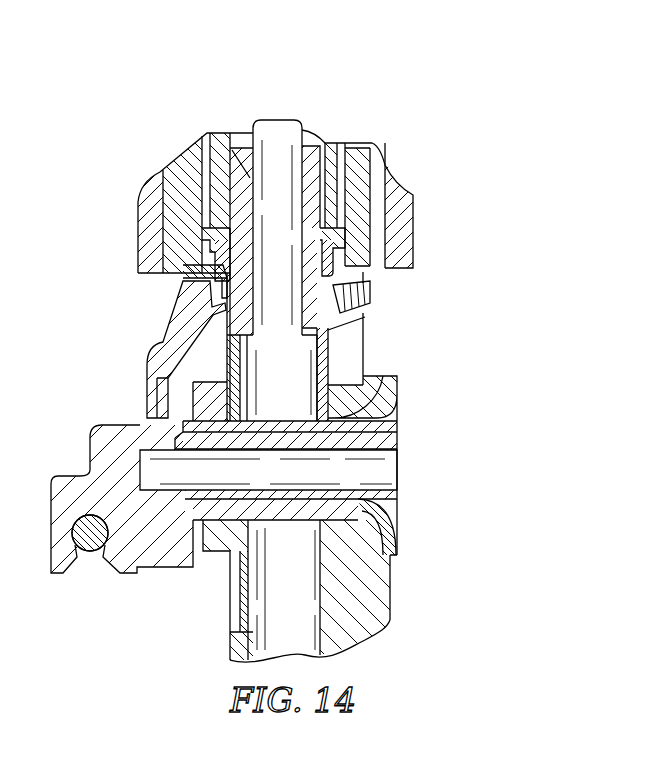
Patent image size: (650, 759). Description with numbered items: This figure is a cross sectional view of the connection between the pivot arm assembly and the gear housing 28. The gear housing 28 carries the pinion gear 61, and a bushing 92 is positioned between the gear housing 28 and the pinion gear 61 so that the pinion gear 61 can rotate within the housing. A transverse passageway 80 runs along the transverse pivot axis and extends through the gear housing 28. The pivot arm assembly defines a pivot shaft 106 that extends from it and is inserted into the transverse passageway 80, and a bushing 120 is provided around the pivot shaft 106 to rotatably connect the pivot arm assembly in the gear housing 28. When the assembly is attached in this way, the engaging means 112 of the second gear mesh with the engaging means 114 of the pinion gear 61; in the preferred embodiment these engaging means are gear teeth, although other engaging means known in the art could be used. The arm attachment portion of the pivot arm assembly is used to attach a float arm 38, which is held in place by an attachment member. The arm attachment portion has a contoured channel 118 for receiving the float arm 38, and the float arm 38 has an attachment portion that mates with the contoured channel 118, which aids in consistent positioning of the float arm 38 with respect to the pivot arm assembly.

The gear housing 28 is at (307, 105).
The pinion gear 61 is at (312, 185).
The bushing 92 is at (207, 234).
The engaging means 112 is at (176, 324).
The engaging means 114 is at (372, 291).
The transverse passageway 80 is at (333, 415).
The pivot shaft 106 is at (397, 486).
The bushing 120 is at (398, 548).
The float arm 38 is at (97, 553).
The contoured channel 118 is at (80, 585).